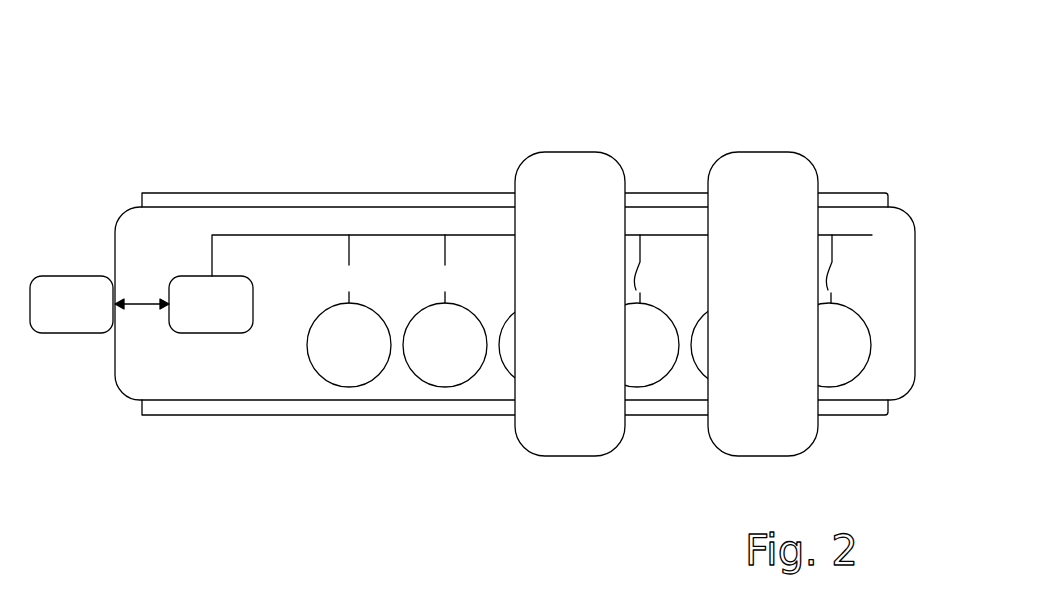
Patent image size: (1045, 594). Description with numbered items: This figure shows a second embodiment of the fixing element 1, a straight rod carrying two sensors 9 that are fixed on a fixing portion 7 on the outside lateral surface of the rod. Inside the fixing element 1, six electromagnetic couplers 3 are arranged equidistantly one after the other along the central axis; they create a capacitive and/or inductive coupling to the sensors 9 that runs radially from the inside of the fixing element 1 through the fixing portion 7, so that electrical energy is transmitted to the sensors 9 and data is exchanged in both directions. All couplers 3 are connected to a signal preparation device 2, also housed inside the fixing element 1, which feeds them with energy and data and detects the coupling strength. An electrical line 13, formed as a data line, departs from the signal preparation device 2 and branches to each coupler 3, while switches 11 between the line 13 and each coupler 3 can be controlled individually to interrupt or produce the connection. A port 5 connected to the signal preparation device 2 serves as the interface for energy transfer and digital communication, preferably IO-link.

The fixing element 1 is at (112, 206).
The signal preparation device 2 is at (170, 276).
The electromagnetic couplers 3 is at (841, 308).
The port 5 is at (78, 333).
The fixing portion 7 is at (893, 408).
The sensors 9 is at (715, 460).
The switches 11 is at (433, 290).
The electrical line 13 is at (263, 235).